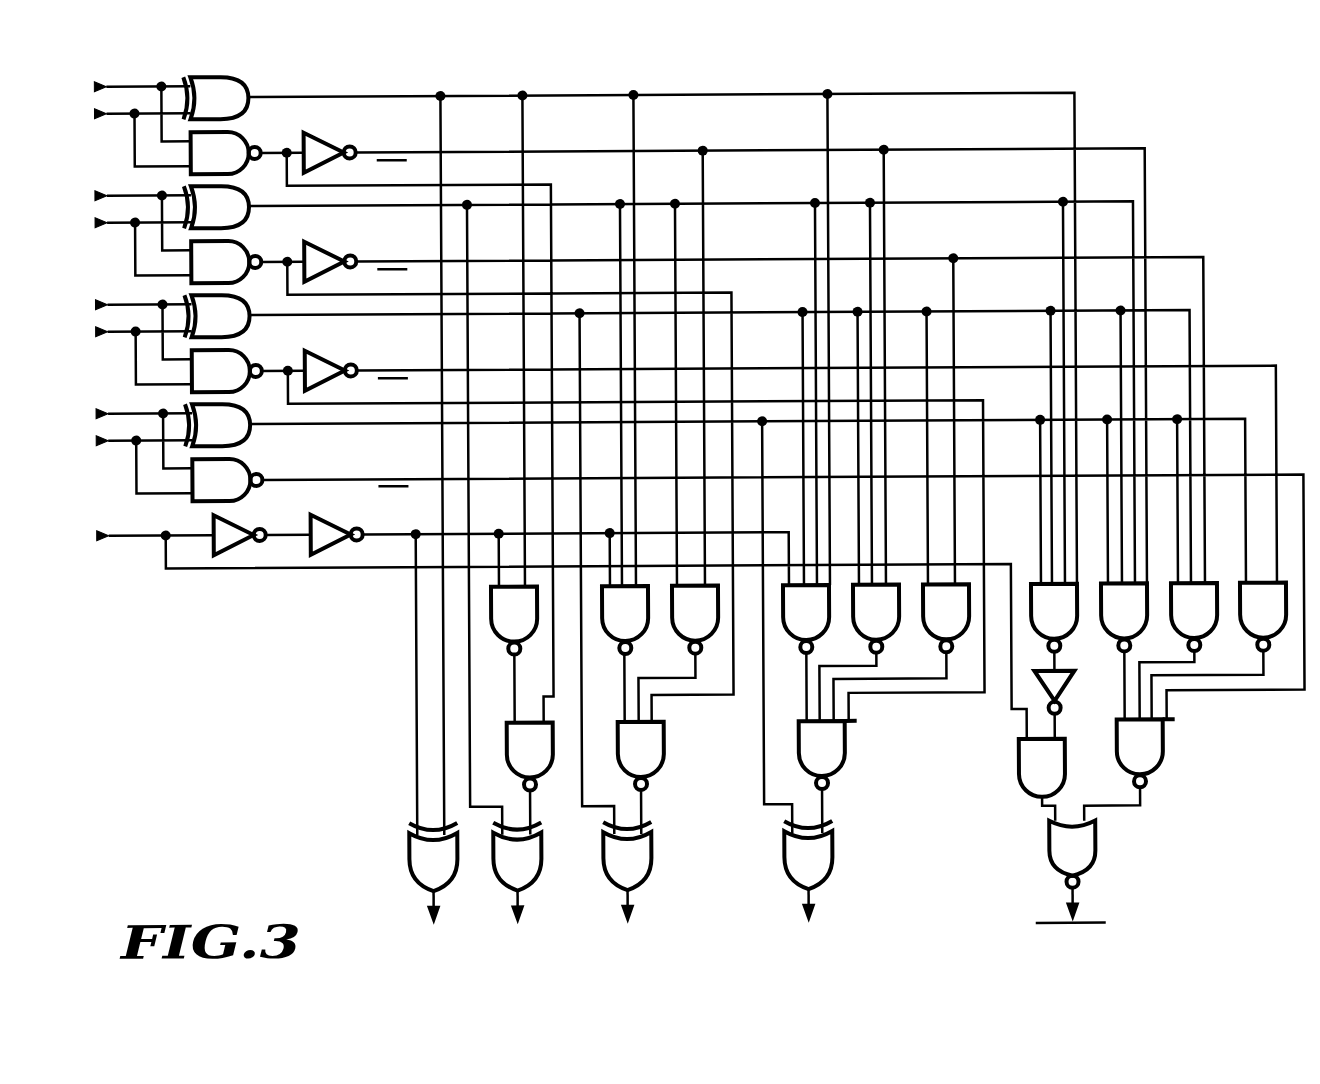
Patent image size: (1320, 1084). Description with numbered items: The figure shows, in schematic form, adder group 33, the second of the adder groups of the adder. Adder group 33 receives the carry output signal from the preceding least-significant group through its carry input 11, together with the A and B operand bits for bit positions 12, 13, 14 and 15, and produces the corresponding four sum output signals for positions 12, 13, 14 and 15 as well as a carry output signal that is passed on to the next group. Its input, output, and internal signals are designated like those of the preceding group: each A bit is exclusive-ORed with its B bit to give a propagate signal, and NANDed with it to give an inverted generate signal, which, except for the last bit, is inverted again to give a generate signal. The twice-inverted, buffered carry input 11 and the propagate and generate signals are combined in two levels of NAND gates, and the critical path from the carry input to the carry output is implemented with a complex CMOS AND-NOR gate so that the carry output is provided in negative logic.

The adder group 33 is at (667, 513).
The carry input COUT11 buffer 11 is at (529, 627).
The sum output S12 exclusive-OR gate 12 is at (431, 524).
The sum output S13 exclusive-OR gate 13 is at (505, 577).
The sum output S14 exclusive-OR gate 14 is at (616, 632).
The sum output S15 exclusive-OR gate 15 is at (798, 685).